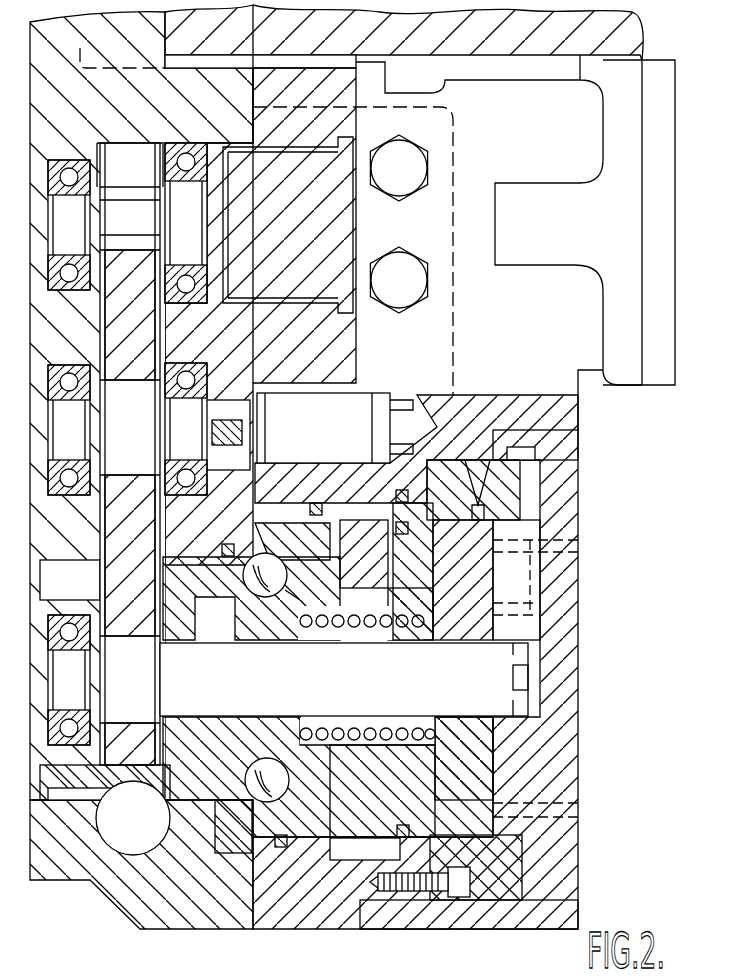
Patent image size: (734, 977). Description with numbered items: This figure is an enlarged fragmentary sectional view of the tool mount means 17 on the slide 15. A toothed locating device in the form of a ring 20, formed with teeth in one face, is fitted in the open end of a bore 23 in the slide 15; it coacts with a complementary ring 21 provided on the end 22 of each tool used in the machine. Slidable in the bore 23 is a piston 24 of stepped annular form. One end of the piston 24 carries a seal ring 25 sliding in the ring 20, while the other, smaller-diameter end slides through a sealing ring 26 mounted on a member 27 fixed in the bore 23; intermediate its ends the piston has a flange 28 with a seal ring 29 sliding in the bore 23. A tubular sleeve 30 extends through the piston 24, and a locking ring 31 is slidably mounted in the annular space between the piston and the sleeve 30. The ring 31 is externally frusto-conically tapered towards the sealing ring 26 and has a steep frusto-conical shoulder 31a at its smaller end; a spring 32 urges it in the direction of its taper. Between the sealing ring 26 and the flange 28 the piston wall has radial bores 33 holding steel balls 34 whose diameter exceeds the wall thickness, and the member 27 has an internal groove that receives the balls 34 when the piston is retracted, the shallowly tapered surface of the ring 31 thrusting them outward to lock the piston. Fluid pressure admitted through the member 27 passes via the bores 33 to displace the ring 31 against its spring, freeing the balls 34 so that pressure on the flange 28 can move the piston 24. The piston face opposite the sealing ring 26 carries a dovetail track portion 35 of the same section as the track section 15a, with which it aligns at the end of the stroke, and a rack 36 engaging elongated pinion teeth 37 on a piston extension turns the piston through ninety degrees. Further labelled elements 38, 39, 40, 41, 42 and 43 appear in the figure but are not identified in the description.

The slide 15 is at (457, 902).
The dovetail track section 15a is at (510, 610).
The tool mount means 17 is at (470, 860).
The ring 20 is at (447, 848).
The complementary ring 21 is at (507, 492).
The end 22 is at (523, 528).
The bore 23 is at (345, 850).
The piston 24 is at (395, 790).
The seal ring 25 is at (415, 825).
The sealing ring 26 is at (230, 548).
The member 27 is at (235, 822).
The flange 28 is at (310, 507).
The seal ring 29 is at (318, 506).
The tubular sleeve 30 is at (256, 726).
The locking ring 31 is at (292, 735).
The frusto-conical shoulder 31a is at (236, 596).
The spring 32 is at (358, 620).
The radial bores 33 is at (287, 597).
The steel balls 34 is at (266, 575).
The dovetail track portion 35 is at (465, 740).
The rack 36 is at (133, 836).
The pinion teeth 37 is at (73, 790).
The shaft 38 is at (470, 657).
The pillar 39 is at (116, 568).
The head block 40 is at (534, 205).
The shaft end 41 is at (534, 677).
The piston 42 is at (463, 576).
The cover plate 43 is at (552, 449).